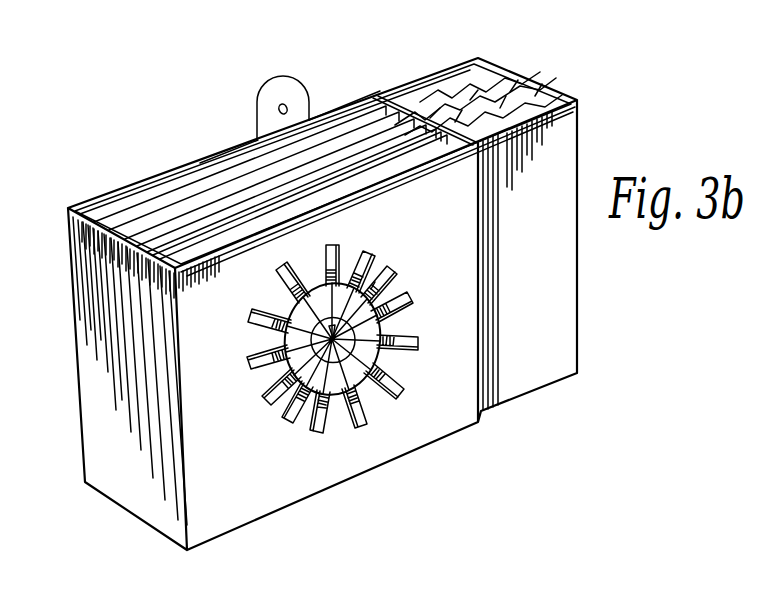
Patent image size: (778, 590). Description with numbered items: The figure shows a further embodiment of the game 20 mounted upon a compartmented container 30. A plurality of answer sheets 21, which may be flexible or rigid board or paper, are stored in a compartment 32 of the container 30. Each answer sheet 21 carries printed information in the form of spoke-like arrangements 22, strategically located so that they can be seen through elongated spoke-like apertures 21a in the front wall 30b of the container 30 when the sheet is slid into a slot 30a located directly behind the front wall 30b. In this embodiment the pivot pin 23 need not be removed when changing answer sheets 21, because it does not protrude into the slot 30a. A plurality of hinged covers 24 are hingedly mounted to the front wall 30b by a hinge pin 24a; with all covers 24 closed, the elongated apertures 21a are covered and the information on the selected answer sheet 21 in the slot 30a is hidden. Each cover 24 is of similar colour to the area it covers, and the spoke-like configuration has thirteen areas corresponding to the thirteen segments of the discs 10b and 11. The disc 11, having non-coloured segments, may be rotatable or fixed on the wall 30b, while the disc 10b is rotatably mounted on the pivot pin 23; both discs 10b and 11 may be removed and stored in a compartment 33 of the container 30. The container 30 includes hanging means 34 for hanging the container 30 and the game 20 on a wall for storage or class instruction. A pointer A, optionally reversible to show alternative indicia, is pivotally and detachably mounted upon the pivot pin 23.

The game 20 is at (527, 407).
The compartmented container 30 is at (113, 430).
The slot 30a is at (353, 192).
The front wall 30b is at (286, 482).
The compartment 32 is at (110, 196).
The answer sheets 21 is at (253, 200).
The elongated spoke-like apertures 21a is at (328, 428).
The hanging means 34 is at (305, 95).
The compartment 33 is at (500, 113).
The spoke-like arrangements 22 is at (394, 272).
The pivot pin 23 is at (352, 345).
The hinged covers 24 is at (350, 278).
The hinge pin 24a is at (320, 275).
The pointer A is at (375, 282).
The disc 11 is at (250, 343).
The disc 10b is at (298, 392).